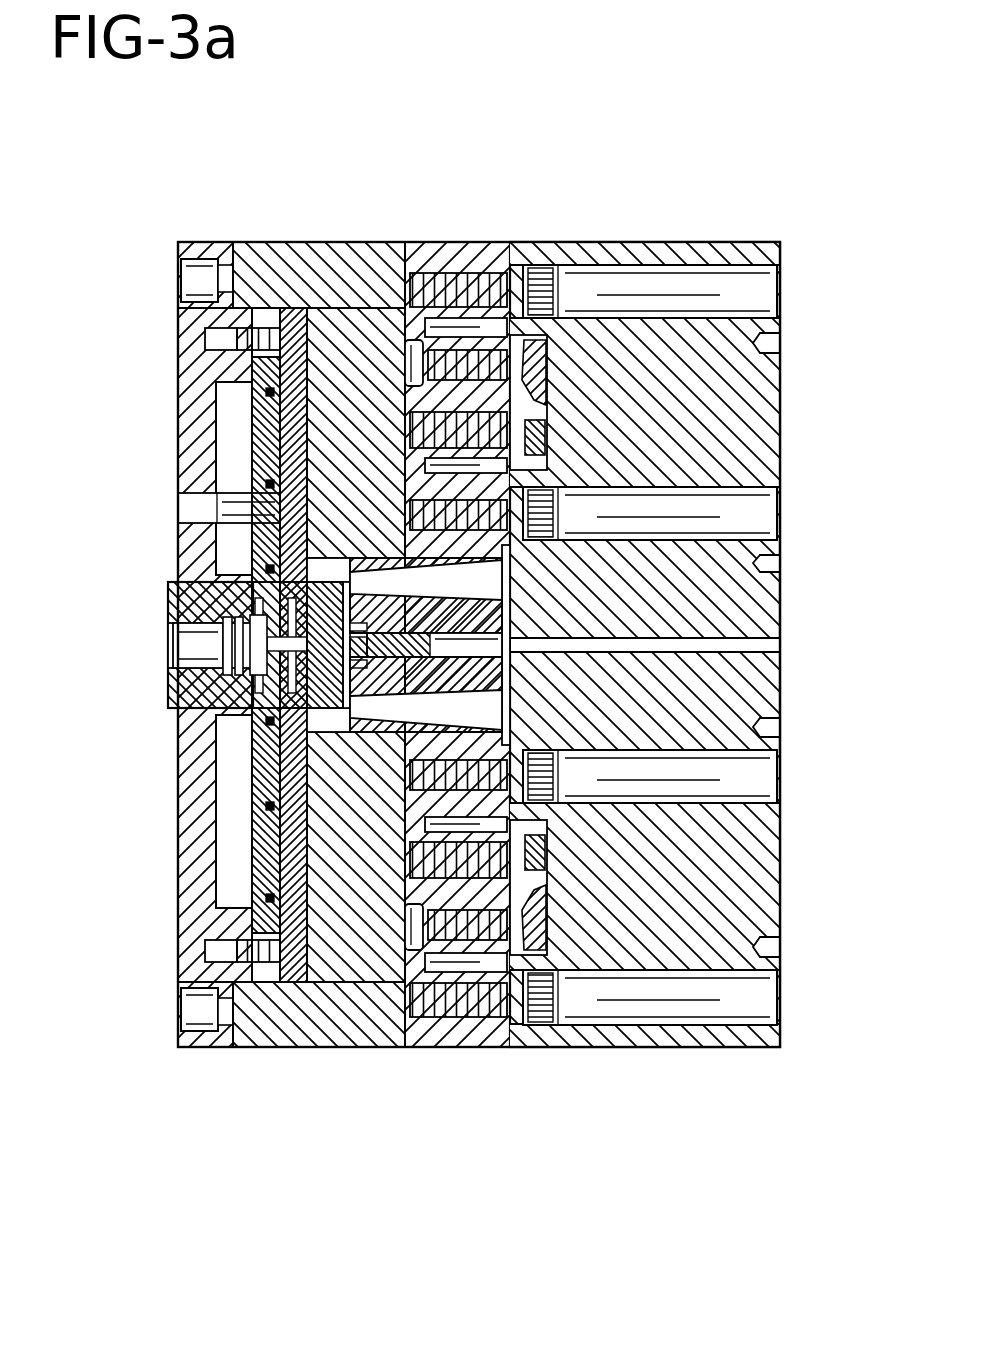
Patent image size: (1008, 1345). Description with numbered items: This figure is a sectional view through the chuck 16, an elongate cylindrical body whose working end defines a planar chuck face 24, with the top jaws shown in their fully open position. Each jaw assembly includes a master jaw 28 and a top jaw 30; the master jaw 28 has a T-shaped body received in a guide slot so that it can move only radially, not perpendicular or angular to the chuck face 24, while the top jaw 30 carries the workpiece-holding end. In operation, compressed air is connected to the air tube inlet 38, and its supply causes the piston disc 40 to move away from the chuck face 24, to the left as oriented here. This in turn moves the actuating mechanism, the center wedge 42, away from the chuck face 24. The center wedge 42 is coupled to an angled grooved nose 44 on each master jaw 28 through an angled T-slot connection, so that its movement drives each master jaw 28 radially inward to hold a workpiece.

The chuck 16 is at (317, 1046).
The chuck face 24 is at (531, 1044).
The master jaw 28 is at (460, 1047).
The top jaw 30 is at (781, 398).
The air tube inlet 38 is at (167, 638).
The piston disc 40 is at (255, 415).
The center wedge 42 is at (374, 698).
The angled grooved nose 44 is at (508, 575).